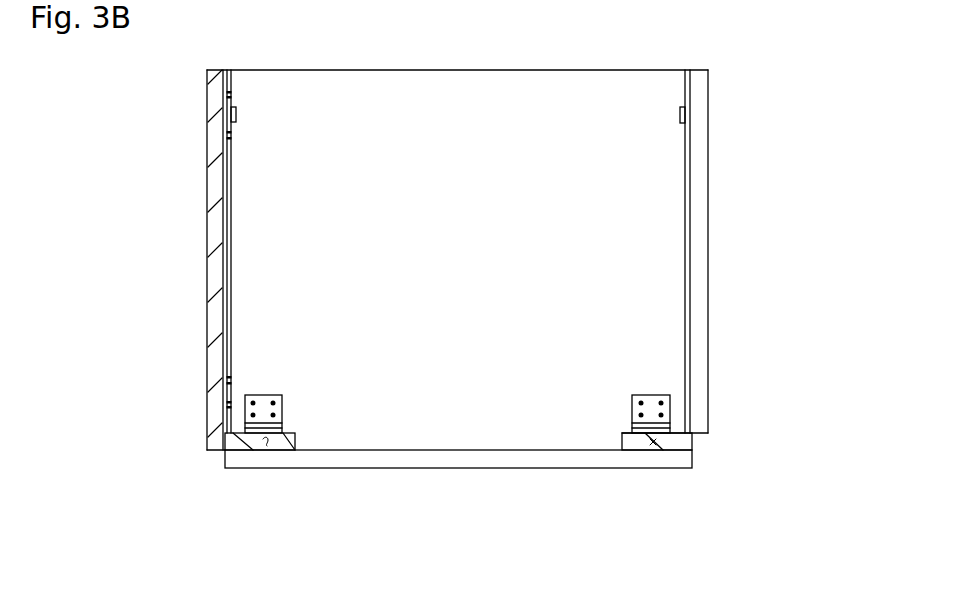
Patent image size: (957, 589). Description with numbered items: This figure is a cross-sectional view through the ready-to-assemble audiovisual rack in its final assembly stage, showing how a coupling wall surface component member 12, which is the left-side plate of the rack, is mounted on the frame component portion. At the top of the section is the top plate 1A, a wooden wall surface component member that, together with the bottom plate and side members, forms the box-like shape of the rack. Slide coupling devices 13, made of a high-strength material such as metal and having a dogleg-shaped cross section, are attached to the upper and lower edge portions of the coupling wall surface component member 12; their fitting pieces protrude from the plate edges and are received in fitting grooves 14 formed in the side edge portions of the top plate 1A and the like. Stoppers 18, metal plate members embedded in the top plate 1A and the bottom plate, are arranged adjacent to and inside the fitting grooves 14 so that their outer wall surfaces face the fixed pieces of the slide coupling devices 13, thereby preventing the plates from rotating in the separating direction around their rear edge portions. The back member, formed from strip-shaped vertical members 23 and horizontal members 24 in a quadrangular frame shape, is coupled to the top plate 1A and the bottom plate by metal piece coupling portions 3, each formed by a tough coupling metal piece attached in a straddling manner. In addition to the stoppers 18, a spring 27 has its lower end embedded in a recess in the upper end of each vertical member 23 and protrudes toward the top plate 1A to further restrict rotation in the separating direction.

The coupling wall surface component member 12 is at (214, 193).
The slide coupling device 13 is at (226, 101).
The fitting groove 14 is at (232, 258).
The stopper 18 is at (236, 113).
The top plate 1A is at (462, 162).
The metal piece coupling portion 3 is at (294, 417).
The vertical member 23 is at (240, 451).
The horizontal member 24 is at (478, 469).
The spring 27 is at (268, 452).